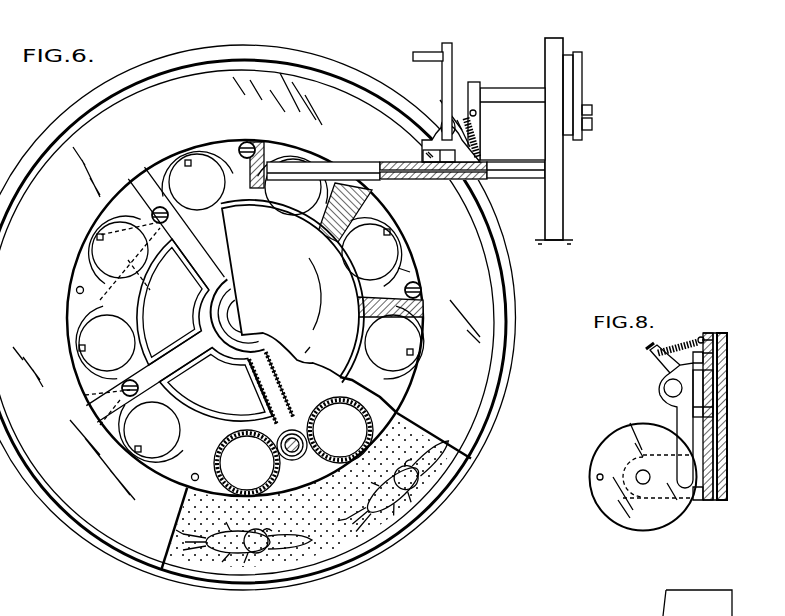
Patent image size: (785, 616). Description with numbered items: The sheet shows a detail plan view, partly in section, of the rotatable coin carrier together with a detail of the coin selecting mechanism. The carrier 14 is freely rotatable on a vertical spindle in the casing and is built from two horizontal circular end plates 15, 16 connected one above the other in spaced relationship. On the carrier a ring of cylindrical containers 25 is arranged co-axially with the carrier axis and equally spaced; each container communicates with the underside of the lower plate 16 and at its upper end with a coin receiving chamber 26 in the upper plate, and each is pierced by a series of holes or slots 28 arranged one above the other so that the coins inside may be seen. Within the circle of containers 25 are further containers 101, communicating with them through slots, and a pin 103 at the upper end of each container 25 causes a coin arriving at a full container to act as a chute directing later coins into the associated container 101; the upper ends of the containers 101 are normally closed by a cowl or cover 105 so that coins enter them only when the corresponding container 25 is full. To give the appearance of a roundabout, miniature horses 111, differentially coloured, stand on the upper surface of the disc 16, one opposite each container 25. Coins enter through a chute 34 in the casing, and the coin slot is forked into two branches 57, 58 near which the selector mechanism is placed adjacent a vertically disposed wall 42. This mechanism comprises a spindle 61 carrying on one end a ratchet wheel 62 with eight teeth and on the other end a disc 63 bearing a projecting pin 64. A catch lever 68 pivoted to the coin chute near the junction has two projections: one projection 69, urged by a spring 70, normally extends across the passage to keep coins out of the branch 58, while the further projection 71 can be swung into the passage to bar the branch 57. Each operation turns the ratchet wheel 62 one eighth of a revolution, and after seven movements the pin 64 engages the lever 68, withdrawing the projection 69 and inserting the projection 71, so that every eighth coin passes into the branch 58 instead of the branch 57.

In FIG. 6, the carrier 14 is at (83, 530).
In FIG. 6, the upper end plate 15 is at (507, 272).
In FIG. 6, the lower end plate 16 is at (333, 567).
In FIG. 6, the containers 25 is at (367, 428).
In FIG. 6, the coin receiving chamber 26 is at (400, 270).
In FIG. 6, the holes or slots 28 is at (365, 452).
In FIG. 6, the chute 34 is at (420, 179).
In FIG. 8, the chute 34 is at (714, 430).
In FIG. 6, the vertically disposed wall 42 is at (555, 213).
In FIG. 6, the branch 57 is at (310, 170).
In FIG. 6, the branch 58 is at (550, 168).
In FIG. 6, the spindle 61 is at (498, 98).
In FIG. 8, the spindle 61 is at (643, 482).
In FIG. 6, the ratchet wheel 62 is at (578, 72).
In FIG. 6, the disc 63 is at (450, 58).
In FIG. 8, the disc 63 is at (610, 458).
In FIG. 6, the projecting pin 64 is at (424, 55).
In FIG. 8, the projecting pin 64 is at (597, 477).
In FIG. 6, the catch lever 68 is at (435, 140).
In FIG. 8, the catch lever 68 is at (678, 405).
In FIG. 8, the projection 69 is at (725, 350).
In FIG. 6, the spring 70 is at (480, 132).
In FIG. 8, the spring 70 is at (678, 348).
In FIG. 8, the projection 71 is at (713, 407).
In FIG. 6, the further containers 101 is at (204, 330).
In FIG. 6, the pin 103 is at (85, 347).
In FIG. 6, the cowl or cover 105 is at (309, 306).
In FIG. 6, the miniature horses 111 is at (233, 565).